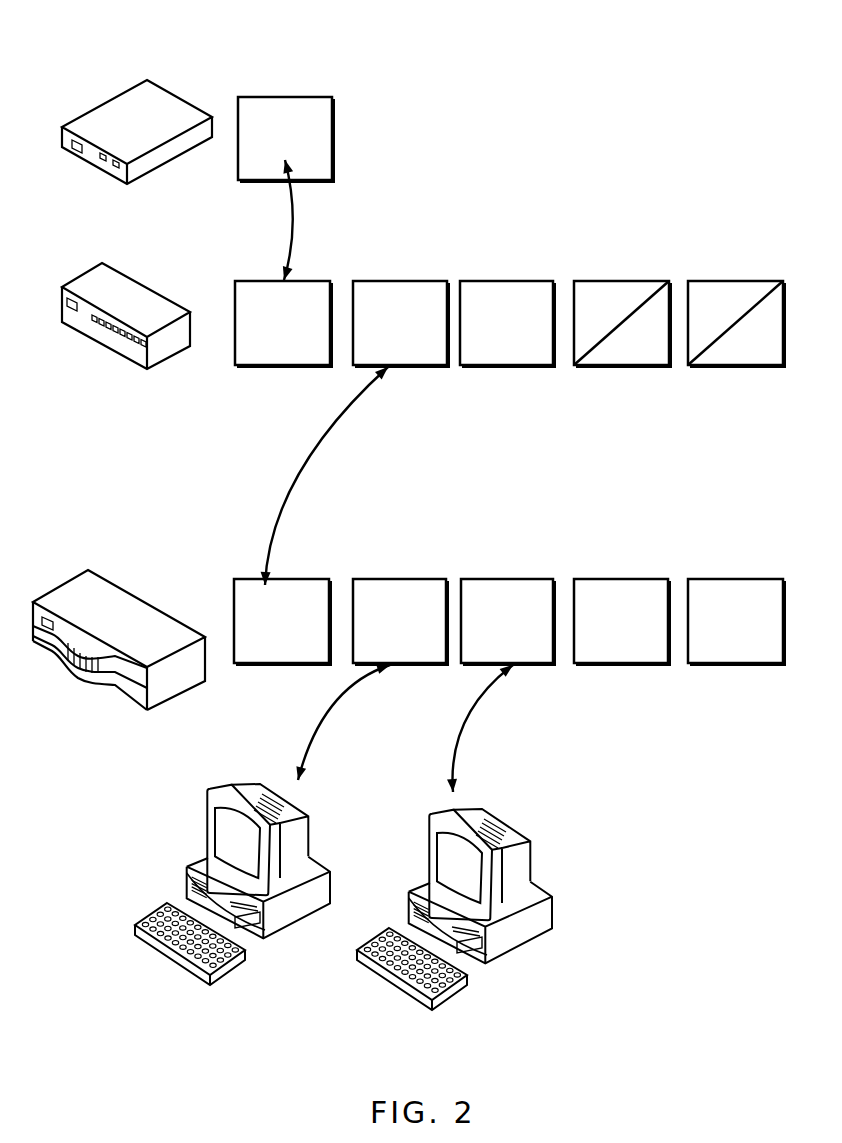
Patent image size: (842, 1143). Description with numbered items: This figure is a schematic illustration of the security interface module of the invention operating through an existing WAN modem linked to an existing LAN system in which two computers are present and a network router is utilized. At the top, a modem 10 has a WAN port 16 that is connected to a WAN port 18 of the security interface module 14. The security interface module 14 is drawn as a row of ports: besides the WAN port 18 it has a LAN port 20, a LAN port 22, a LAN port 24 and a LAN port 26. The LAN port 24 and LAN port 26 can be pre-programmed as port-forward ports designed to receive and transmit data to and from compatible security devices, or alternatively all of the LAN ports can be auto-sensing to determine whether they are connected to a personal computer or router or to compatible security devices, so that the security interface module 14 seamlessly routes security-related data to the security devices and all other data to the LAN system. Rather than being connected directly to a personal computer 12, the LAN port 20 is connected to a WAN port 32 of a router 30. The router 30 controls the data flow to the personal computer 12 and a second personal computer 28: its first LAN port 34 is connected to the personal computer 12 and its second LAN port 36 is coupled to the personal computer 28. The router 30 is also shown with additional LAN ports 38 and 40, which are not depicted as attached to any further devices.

The modem 10 is at (148, 107).
The personal computer 12 is at (277, 935).
The security interface module 14 is at (120, 290).
The WAN port 16 is at (318, 97).
The WAN port 18 is at (308, 281).
The LAN port 20 is at (414, 281).
The LAN port 22 is at (523, 281).
The LAN port 24 is at (645, 281).
The LAN port 26 is at (745, 281).
The personal computer 28 is at (499, 960).
The router 30 is at (97, 593).
The WAN port 32 is at (295, 579).
The first LAN port 34 is at (395, 579).
The second LAN port 36 is at (502, 579).
The additional LAN port 38 is at (618, 663).
The additional LAN port 40 is at (727, 663).